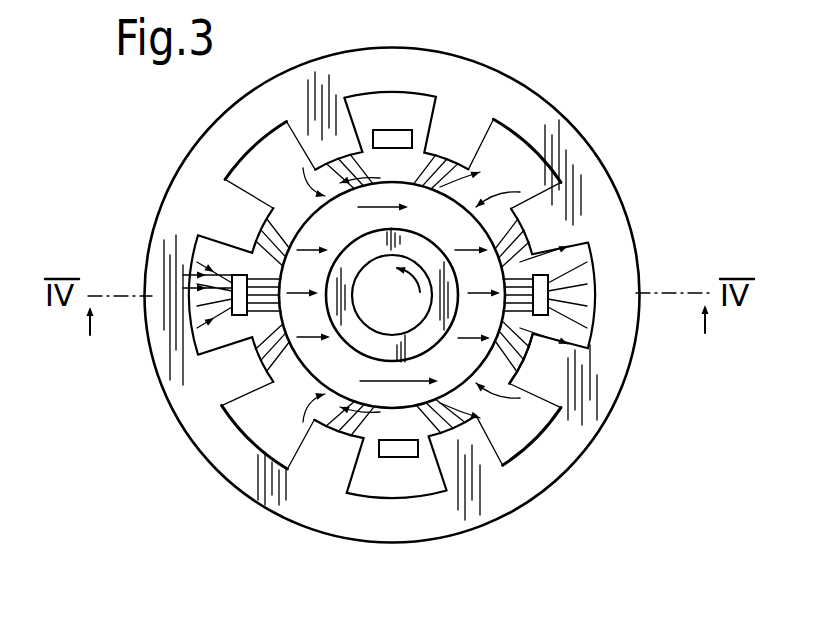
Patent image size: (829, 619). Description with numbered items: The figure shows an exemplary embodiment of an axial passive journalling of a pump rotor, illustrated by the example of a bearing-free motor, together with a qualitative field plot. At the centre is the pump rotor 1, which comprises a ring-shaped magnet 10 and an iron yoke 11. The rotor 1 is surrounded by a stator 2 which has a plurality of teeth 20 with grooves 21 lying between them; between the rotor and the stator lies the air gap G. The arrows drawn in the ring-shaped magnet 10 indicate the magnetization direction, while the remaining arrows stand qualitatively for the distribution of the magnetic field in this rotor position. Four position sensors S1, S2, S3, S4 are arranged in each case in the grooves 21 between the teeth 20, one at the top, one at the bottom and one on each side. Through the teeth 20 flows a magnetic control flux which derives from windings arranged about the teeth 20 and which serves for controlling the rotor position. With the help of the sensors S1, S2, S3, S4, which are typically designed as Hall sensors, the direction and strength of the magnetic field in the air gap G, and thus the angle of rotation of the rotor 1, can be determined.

The pump rotor 1 is at (477, 207).
The stator 2 is at (620, 186).
The air gap G is at (513, 247).
The ring-shaped magnet 10 is at (337, 375).
The iron yoke 11 is at (352, 252).
The teeth 20 is at (547, 370).
The grooves 21 is at (522, 433).
The position sensor S1 is at (550, 292).
The position sensor S2 is at (388, 130).
The position sensor S3 is at (232, 300).
The position sensor S4 is at (395, 457).